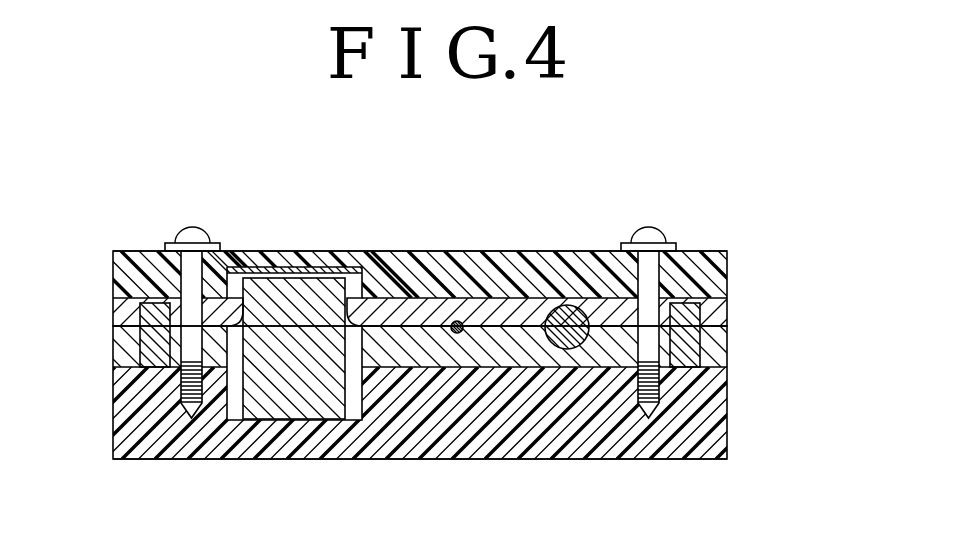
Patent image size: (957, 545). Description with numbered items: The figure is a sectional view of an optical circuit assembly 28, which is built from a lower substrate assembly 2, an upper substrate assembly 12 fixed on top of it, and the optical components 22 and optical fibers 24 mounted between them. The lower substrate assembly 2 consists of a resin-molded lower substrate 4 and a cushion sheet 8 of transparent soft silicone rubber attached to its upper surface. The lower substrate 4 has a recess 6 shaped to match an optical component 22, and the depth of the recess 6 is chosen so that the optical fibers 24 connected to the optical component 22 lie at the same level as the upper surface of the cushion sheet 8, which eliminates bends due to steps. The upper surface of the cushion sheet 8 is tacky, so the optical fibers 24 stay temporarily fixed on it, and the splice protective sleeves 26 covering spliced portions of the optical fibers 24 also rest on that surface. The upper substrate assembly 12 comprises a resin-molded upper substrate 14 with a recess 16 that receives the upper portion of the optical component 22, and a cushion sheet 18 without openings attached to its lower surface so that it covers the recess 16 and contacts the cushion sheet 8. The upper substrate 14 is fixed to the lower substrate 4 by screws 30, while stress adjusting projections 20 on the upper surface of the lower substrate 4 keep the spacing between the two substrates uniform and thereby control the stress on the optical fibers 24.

The lower substrate assembly 2 is at (797, 333).
The lower substrate 4 is at (505, 458).
The recess 6 is at (229, 403).
The cushion sheet 8 is at (717, 350).
The upper substrate assembly 12 is at (797, 251).
The upper substrate 14 is at (397, 262).
The recess 16 is at (353, 276).
The cushion sheet 18 is at (133, 278).
The stress adjusting projection 20 is at (150, 350).
The optical component 22 is at (297, 307).
The optical fiber 24 is at (457, 321).
The splice protective sleeve 26 is at (572, 320).
The optical circuit assembly 28 is at (505, 250).
The screw 30 is at (192, 230).